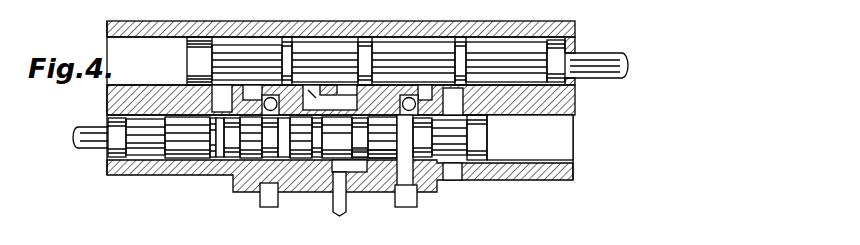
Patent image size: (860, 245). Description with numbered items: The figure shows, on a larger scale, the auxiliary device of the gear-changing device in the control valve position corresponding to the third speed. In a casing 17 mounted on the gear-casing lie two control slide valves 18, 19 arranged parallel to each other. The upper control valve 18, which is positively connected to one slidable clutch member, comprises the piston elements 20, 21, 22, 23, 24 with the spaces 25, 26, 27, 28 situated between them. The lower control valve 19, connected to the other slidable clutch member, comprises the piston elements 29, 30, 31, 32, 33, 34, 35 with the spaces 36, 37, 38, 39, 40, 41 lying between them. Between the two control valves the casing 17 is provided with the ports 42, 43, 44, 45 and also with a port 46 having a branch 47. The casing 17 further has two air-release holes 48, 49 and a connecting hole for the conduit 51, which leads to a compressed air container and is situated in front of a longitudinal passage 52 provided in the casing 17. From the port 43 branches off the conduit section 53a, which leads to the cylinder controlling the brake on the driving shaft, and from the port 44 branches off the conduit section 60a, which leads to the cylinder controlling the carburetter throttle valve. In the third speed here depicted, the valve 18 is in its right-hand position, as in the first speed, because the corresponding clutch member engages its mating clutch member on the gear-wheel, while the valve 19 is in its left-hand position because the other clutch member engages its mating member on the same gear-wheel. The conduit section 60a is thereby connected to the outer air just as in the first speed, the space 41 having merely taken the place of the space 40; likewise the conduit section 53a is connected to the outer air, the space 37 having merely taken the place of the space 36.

The casing 17 is at (577, 100).
The control slide valve 18 is at (602, 65).
The control slide valve 19 is at (88, 137).
The piston element 20 is at (198, 57).
The piston element 21 is at (287, 55).
The piston element 22 is at (365, 54).
The piston element 23 is at (462, 56).
The piston element 24 is at (550, 60).
The space 25 is at (222, 46).
The space 26 is at (327, 45).
The space 27 is at (394, 45).
The space 28 is at (493, 45).
The piston element 29 is at (117, 142).
The piston element 30 is at (185, 145).
The piston element 31 is at (232, 143).
The piston element 32 is at (309, 158).
The piston element 33 is at (368, 168).
The piston element 34 is at (424, 150).
The piston element 35 is at (478, 153).
The space 36 is at (142, 152).
The space 37 is at (213, 153).
The space 38 is at (276, 150).
The space 39 is at (353, 150).
The space 40 is at (373, 150).
The space 41 is at (455, 153).
The port 42 is at (222, 98).
The port 43 is at (249, 92).
The port 44 is at (424, 96).
The port 45 is at (460, 105).
The port 46 is at (346, 100).
The branch 47 is at (313, 96).
The air-release hole 48 is at (220, 152).
The air-release hole 49 is at (446, 167).
The conduit 51 is at (341, 208).
The longitudinal passage 52 is at (309, 152).
The conduit section 53a is at (263, 150).
The conduit section 60a is at (399, 197).